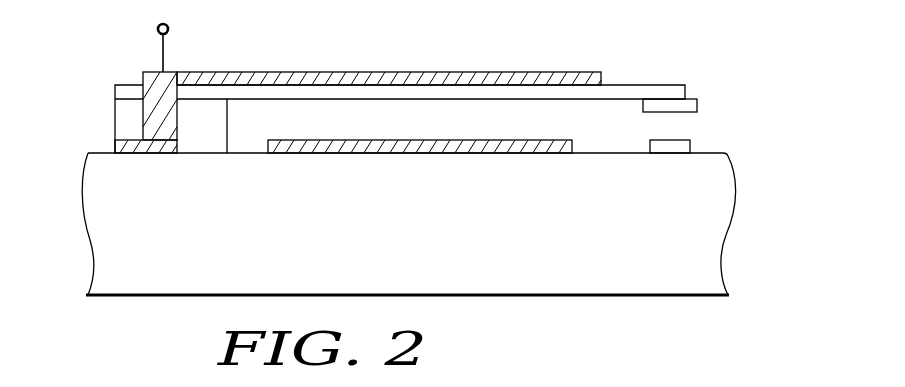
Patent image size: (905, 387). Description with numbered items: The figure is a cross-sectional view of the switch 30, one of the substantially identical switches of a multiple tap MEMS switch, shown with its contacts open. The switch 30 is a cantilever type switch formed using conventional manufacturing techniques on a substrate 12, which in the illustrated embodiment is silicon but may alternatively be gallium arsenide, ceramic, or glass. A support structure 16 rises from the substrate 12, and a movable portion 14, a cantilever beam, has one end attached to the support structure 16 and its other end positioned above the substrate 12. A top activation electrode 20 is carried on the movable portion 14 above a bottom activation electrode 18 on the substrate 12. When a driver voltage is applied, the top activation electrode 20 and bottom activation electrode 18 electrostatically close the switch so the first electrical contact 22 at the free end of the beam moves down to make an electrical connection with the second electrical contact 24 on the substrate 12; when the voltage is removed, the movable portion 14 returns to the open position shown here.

The substrate 12 is at (255, 252).
The movable portion 14 is at (622, 90).
The support structure 16 is at (115, 120).
The bottom activation electrode 18 is at (390, 150).
The top activation electrode 20 is at (425, 78).
The first electrical contact 22 is at (688, 106).
The second electrical contact 24 is at (682, 148).
The switch 30 is at (504, 40).